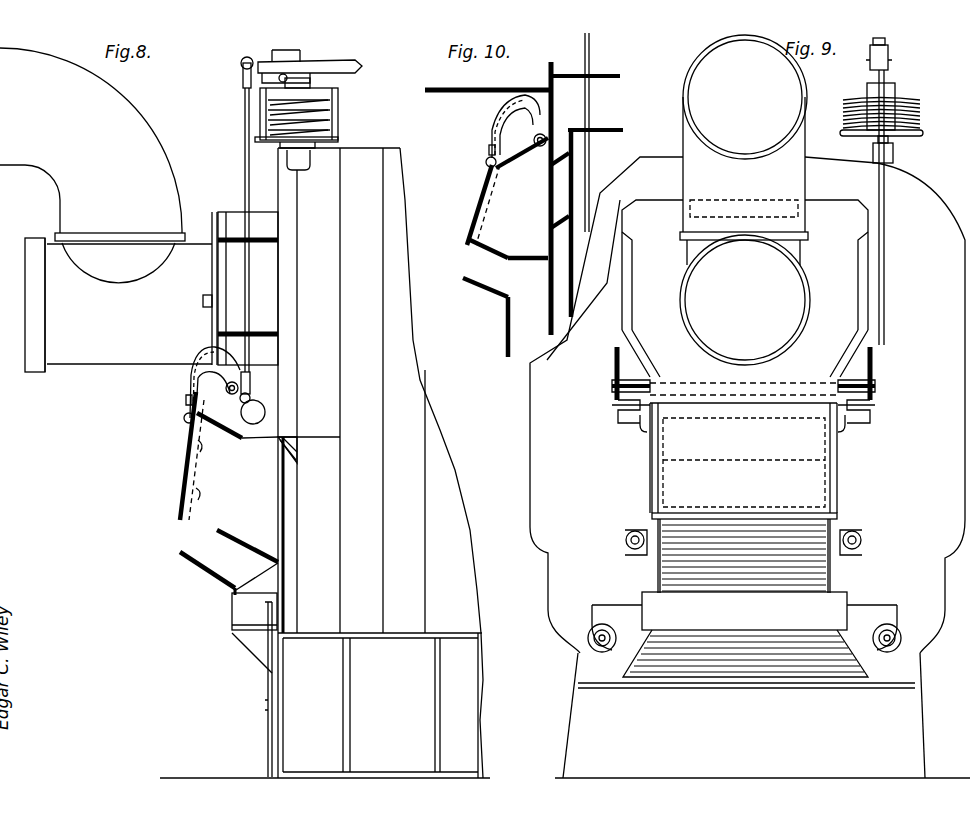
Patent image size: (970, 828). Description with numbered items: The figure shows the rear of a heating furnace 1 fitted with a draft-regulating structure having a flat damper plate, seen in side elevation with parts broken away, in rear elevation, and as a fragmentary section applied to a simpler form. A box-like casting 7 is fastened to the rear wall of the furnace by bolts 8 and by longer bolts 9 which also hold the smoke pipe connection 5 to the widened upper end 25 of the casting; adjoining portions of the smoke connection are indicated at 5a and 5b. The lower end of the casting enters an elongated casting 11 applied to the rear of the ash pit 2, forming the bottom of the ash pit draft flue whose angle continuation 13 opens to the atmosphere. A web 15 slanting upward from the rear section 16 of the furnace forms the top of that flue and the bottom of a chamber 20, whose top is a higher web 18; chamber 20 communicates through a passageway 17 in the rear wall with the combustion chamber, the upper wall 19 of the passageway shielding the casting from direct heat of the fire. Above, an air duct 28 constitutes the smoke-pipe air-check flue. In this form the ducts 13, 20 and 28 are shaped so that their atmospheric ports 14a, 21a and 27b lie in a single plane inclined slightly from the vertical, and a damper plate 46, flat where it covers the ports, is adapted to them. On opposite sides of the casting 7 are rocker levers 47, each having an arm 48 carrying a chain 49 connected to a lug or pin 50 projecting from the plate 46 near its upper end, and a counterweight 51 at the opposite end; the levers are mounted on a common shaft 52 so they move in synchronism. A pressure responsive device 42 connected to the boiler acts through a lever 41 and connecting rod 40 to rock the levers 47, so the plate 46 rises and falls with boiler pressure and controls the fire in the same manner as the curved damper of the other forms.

In FIG. 8, the furnace 1 is at (380, 463).
In FIG. 10, the furnace 1 is at (585, 196).
In FIG. 9, the furnace 1 is at (530, 567).
In FIG. 8, the ash pit 2 is at (380, 705).
In FIG. 9, the ash pit 2 is at (744, 715).
In FIG. 8, the smoke pipe connection 5 is at (121, 292).
In FIG. 10, the smoke pipe connection 5 is at (445, 88).
In FIG. 9, the smoke pipe connection 5 is at (745, 300).
In FIG. 8, the duct branch 5a is at (118, 263).
In FIG. 9, the duct branch 5a is at (790, 247).
In FIG. 8, the elbow pipe 5b is at (92, 144).
In FIG. 9, the elbow pipe 5b is at (744, 137).
In FIG. 8, the casting 7 is at (268, 401).
In FIG. 9, the casting 7 is at (648, 460).
In FIG. 9, the bolts 8 is at (625, 542).
In FIG. 8, the bolts 9 is at (203, 299).
In FIG. 8, the elongated casting 11 is at (234, 633).
In FIG. 9, the elongated casting 11 is at (718, 660).
In FIG. 8, the angle continuation 13 is at (207, 563).
In FIG. 10, the angle continuation 13 is at (493, 280).
In FIG. 9, the angle continuation 13 is at (744, 553).
In FIG. 8, the port 14a is at (180, 548).
In FIG. 10, the port 14a is at (465, 262).
In FIG. 9, the port 14a is at (838, 562).
In FIG. 8, the web 15 is at (257, 572).
In FIG. 9, the web 15 is at (730, 513).
In FIG. 8, the rear section 16 is at (277, 530).
In FIG. 10, the rear section 16 is at (548, 302).
In FIG. 8, the passageway 17 is at (291, 457).
In FIG. 8, the web 18 is at (240, 440).
In FIG. 9, the web 18 is at (744, 476).
In FIG. 8, the upper wall of flue 19 is at (297, 452).
In FIG. 8, the chamber 20 is at (221, 542).
In FIG. 10, the chamber 20 is at (524, 226).
In FIG. 8, the port 21a is at (192, 490).
In FIG. 10, the port 21a is at (488, 214).
In FIG. 8, the upper end of casting 25 is at (248, 288).
In FIG. 9, the upper end of casting 25 is at (865, 295).
In FIG. 8, the port 27b is at (196, 440).
In FIG. 8, the air duct 28 is at (219, 429).
In FIG. 8, the rod 40 is at (243, 162).
In FIG. 9, the rod 40 is at (886, 197).
In FIG. 8, the counterweight lever 41 is at (338, 62).
In FIG. 9, the counterweight lever 41 is at (890, 52).
In FIG. 8, the pressure responsive device 42 is at (338, 110).
In FIG. 9, the pressure responsive device 42 is at (920, 110).
In FIG. 8, the damper plate 46 is at (186, 460).
In FIG. 10, the damper plate 46 is at (486, 182).
In FIG. 9, the damper plate 46 is at (743, 458).
In FIG. 8, the rocker levers 47 is at (208, 360).
In FIG. 10, the rocker levers 47 is at (512, 112).
In FIG. 8, the arm 48 is at (190, 378).
In FIG. 10, the arm 48 is at (492, 128).
In FIG. 9, the arm 48 is at (614, 352).
In FIG. 8, the chain 49 is at (186, 398).
In FIG. 10, the chain 49 is at (489, 148).
In FIG. 9, the chain 49 is at (612, 372).
In FIG. 8, the lug or pin 50 is at (184, 417).
In FIG. 10, the lug or pin 50 is at (486, 162).
In FIG. 9, the lug or pin 50 is at (743, 429).
In FIG. 8, the counterweight 51 is at (265, 410).
In FIG. 9, the counterweight 51 is at (618, 420).
In FIG. 8, the shaft 52 is at (226, 389).
In FIG. 10, the shaft 52 is at (529, 150).
In FIG. 9, the shaft 52 is at (743, 374).